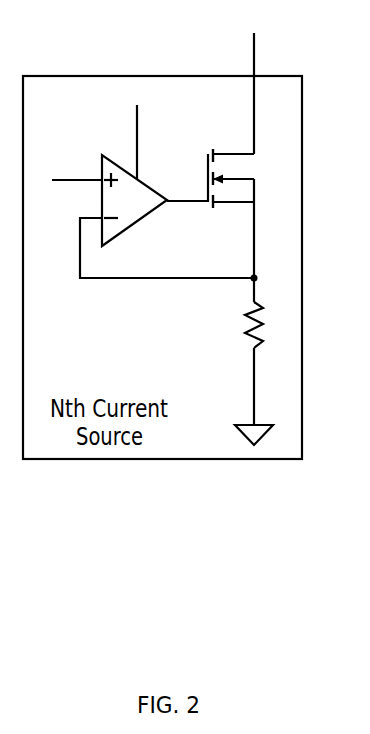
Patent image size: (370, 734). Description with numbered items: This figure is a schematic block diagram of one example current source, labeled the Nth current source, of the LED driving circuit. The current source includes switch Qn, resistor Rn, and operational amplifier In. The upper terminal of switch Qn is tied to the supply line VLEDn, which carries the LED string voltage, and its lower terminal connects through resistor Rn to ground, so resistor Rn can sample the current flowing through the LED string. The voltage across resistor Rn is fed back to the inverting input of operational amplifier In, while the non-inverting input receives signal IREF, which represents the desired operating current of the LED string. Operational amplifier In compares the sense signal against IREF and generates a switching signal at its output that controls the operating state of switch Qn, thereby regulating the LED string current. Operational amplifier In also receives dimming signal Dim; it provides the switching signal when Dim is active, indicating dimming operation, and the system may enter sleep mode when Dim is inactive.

The element VLEDn is at (298, 91).
The dimming signal Dim is at (162, 136).
The signal IREF is at (73, 162).
The operational amplifier In is at (167, 216).
The switch Qn is at (250, 215).
The resistor Rn is at (271, 351).